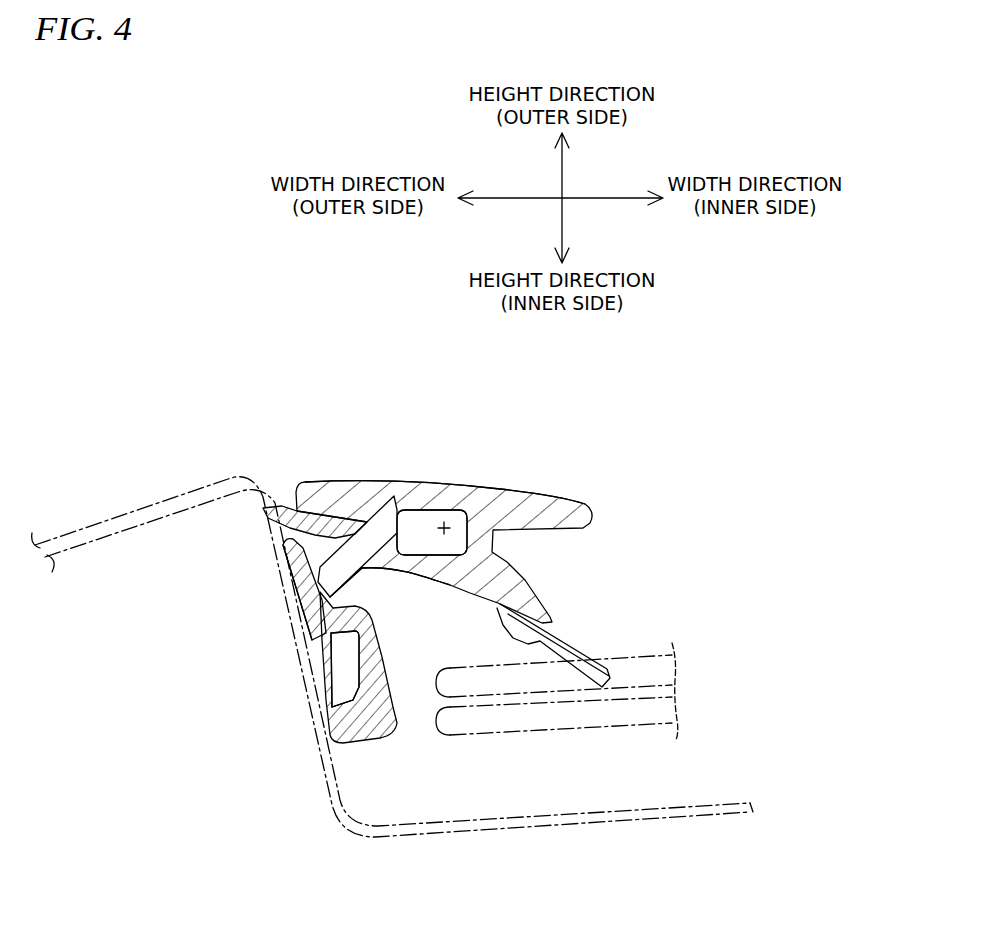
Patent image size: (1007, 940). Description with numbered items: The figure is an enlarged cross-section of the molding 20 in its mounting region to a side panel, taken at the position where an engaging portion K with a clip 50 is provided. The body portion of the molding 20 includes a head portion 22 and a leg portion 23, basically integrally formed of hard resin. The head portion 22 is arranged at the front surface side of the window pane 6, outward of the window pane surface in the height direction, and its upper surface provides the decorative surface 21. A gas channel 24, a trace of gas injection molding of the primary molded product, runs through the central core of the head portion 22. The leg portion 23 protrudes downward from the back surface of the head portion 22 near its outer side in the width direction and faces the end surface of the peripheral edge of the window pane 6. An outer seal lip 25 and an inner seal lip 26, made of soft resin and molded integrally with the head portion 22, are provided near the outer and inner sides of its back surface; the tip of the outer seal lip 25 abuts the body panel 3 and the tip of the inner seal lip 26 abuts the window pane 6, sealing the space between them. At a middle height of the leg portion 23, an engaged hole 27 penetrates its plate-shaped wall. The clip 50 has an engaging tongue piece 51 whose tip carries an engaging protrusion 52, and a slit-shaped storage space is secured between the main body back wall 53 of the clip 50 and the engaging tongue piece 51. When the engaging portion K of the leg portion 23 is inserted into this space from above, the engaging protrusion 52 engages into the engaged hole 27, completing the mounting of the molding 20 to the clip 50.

The body panel 3 is at (157, 497).
The window pane 6 is at (632, 660).
The molding 20 is at (449, 546).
The decorative surface 21 is at (430, 485).
The head portion 22 is at (370, 485).
The leg portion 23 is at (347, 588).
The gas channel 24 is at (445, 527).
The outer seal lip 25 is at (283, 508).
The inner seal lip 26 is at (567, 642).
The engaged hole 27 is at (300, 614).
The clip 50 is at (319, 666).
The engaging tongue piece 51 is at (387, 663).
The engaging protrusion 52 is at (345, 658).
The main body back wall 53 is at (298, 604).
The engaging portion K is at (343, 666).